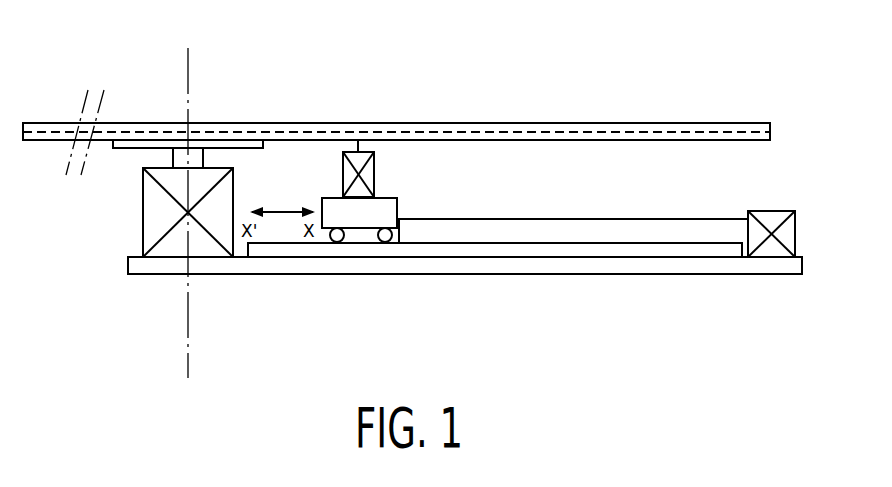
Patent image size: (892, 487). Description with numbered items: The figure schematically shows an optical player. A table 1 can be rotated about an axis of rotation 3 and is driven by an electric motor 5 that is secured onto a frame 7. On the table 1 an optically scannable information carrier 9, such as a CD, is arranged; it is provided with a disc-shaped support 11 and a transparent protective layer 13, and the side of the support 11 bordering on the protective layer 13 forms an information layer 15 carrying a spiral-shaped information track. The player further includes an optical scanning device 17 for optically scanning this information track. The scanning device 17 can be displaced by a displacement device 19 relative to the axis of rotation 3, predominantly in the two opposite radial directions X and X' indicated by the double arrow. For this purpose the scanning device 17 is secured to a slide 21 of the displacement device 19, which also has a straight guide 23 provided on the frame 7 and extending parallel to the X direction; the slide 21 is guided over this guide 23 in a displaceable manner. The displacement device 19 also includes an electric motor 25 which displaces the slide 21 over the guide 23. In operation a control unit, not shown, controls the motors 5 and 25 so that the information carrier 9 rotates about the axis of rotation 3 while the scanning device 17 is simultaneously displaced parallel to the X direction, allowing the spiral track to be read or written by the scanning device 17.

The table 1 is at (141, 139).
The axis of rotation 3 is at (188, 63).
The electric motor 5 is at (152, 216).
The frame 7 is at (485, 275).
The optically scannable information carrier 9 is at (611, 94).
The disc-shaped support 11 is at (427, 124).
The transparent protective layer 13 is at (543, 141).
The information layer 15 is at (496, 131).
The optical scanning device 17 is at (375, 175).
The displacement device 19 is at (616, 211).
The slide 21 is at (390, 206).
The straight guide 23 is at (594, 250).
The electric motor 25 is at (774, 212).